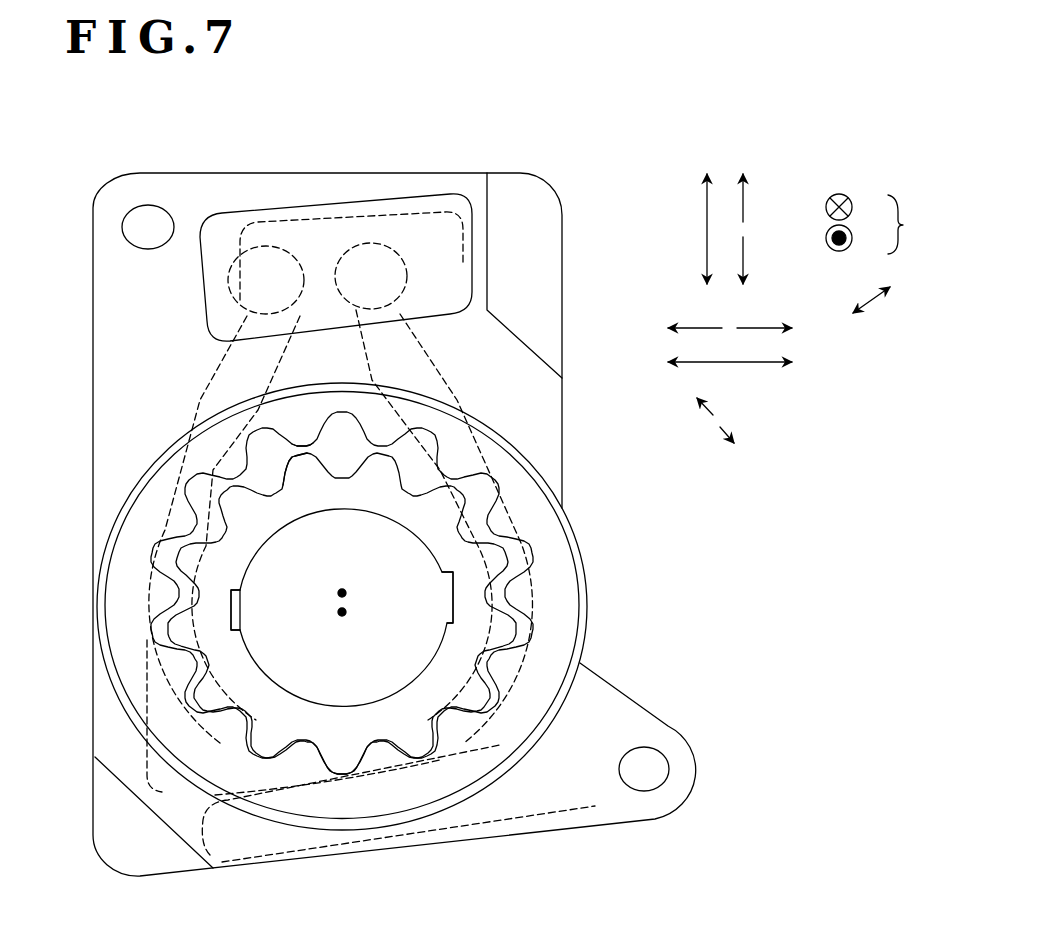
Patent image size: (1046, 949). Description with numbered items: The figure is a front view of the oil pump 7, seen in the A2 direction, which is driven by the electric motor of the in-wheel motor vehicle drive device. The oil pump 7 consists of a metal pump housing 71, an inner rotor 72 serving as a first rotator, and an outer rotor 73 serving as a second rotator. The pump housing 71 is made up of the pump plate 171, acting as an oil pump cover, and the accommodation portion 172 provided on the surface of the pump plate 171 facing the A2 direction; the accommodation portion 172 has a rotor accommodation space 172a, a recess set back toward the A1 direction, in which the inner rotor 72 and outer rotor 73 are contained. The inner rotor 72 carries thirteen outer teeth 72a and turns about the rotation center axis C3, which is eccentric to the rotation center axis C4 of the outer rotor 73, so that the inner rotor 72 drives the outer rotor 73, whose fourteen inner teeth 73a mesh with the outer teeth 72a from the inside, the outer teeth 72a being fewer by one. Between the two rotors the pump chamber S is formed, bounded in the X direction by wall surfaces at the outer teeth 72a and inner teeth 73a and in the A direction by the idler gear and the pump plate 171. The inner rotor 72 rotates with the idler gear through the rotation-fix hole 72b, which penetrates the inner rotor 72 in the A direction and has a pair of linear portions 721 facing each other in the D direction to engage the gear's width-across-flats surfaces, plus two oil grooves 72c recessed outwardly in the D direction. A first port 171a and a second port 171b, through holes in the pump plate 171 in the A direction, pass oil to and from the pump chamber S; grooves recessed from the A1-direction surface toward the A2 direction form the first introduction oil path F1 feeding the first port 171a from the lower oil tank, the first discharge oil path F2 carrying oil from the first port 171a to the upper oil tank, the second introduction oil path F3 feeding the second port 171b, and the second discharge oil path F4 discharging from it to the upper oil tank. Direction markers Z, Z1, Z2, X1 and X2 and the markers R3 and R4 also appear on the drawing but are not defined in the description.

The oil pump 7 is at (394, 523).
The pump housing 71 is at (580, 226).
The pump plate 171 is at (542, 436).
The first port 171a is at (172, 472).
The second port 171b is at (512, 737).
The accommodation portion 172 is at (587, 589).
The rotor accommodation space 172a is at (561, 529).
The inner rotor 72 is at (424, 745).
The outer teeth 72a is at (288, 462).
The rotation-fix hole 72b is at (270, 681).
The oil grooves 72c is at (233, 600).
The linear portions 721 is at (445, 641).
The outer rotor 73 is at (478, 713).
The inner teeth 73a is at (305, 446).
The pump chamber S is at (345, 432).
The rotation center axis of the inner rotor C3 is at (336, 612).
The rotation center axis of the outer rotor C4 is at (336, 593).
The first introduction oil path F1 is at (147, 757).
The first discharge oil path F2 is at (240, 356).
The second introduction oil path F3 is at (362, 840).
The second discharge oil path F4 is at (418, 364).
The vertical direction Z is at (719, 229).
The upward direction Z1 is at (764, 198).
The downward direction Z2 is at (764, 260).
The X direction X is at (730, 347).
The first width direction X1 is at (695, 311).
The second width direction X2 is at (764, 311).
The A direction A is at (906, 224).
The A1 direction A1 is at (856, 208).
The A2 direction A2 is at (856, 239).
The D direction D is at (871, 293).
The rotation direction R3 of inner rotor R3 is at (745, 442).
The rotation direction R4 of outer rotor R4 is at (719, 399).